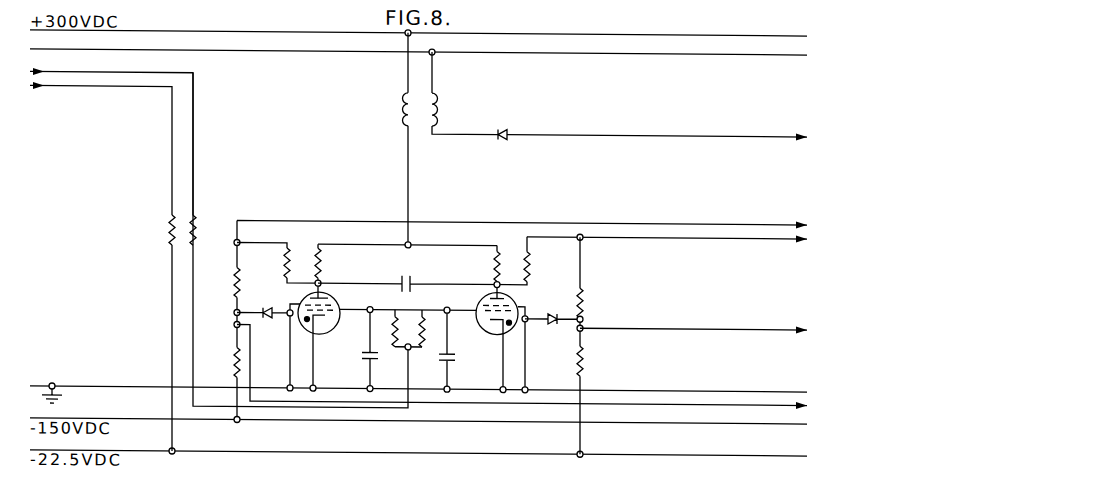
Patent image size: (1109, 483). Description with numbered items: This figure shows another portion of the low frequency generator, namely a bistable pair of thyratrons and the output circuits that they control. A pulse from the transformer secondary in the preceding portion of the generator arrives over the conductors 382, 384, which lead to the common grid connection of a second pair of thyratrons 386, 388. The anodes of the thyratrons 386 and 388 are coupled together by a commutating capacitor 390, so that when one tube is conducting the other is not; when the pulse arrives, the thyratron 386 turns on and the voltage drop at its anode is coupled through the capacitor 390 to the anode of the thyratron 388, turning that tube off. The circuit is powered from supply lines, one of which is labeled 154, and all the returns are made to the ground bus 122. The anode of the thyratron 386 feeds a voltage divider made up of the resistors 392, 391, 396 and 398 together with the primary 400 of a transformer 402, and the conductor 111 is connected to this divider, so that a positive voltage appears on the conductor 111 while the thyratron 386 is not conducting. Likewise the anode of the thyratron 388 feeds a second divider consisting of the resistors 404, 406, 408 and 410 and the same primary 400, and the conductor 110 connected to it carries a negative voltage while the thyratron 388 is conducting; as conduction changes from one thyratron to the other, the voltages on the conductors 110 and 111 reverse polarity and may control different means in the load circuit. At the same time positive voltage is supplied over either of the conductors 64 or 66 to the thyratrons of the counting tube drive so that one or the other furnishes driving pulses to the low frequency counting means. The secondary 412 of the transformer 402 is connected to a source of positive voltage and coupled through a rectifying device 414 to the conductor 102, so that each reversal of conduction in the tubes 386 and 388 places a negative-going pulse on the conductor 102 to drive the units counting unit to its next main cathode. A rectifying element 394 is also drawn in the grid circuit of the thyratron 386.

The conductor 382 is at (98, 73).
The conductor 384 is at (97, 88).
The +50 VDC supply line 154 is at (273, 53).
The transformer 402 is at (432, 139).
The primary 400 is at (387, 139).
The secondary 412 is at (436, 111).
The rectifying device 414 is at (503, 130).
The conductor 102 is at (780, 129).
The conductor 64 is at (780, 217).
The conductor 66 is at (778, 237).
The resistor 396 is at (285, 260).
The resistor 398 is at (322, 260).
The commutating capacitor 390 is at (407, 276).
The resistor 410 is at (494, 261).
The resistor 408 is at (532, 260).
The resistor 406 is at (586, 292).
The resistor 404 is at (586, 355).
The resistor 391 is at (237, 308).
The resistor 392 is at (233, 370).
The diode 394 is at (290, 372).
The thyratron 386 is at (333, 328).
The thyratron 388 is at (479, 328).
The conductor 110 is at (773, 322).
The conductor 111 is at (787, 408).
The ground bus 122 is at (77, 385).